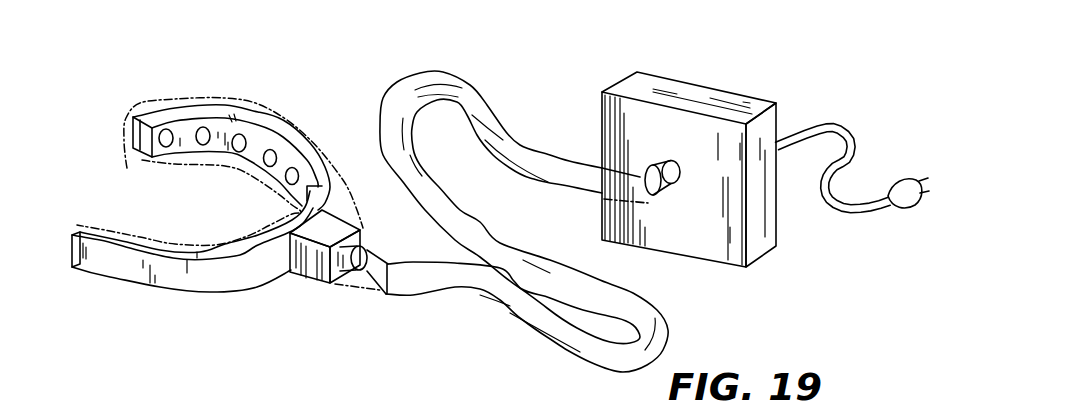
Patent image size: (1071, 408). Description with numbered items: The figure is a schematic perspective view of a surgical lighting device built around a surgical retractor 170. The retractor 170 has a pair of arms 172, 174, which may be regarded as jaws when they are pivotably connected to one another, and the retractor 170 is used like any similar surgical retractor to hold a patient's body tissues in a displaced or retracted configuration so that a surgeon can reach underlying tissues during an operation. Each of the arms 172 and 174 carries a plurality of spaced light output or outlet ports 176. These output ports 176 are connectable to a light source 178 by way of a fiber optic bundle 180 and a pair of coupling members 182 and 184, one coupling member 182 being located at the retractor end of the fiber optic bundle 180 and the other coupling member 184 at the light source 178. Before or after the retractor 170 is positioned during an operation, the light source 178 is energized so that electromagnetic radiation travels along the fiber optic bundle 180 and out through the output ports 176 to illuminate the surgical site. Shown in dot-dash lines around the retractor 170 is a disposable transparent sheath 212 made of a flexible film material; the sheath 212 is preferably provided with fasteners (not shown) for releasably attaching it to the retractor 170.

The surgical retractor 170 is at (186, 205).
The arm 172 is at (187, 282).
The arm 174 is at (215, 121).
The light output ports 176 is at (240, 134).
The light source 178 is at (765, 179).
The fiber optic bundle 180 is at (447, 77).
The coupling member 182 is at (303, 272).
The coupling member 184 is at (670, 183).
The disposable transparent sheath 212 is at (288, 286).